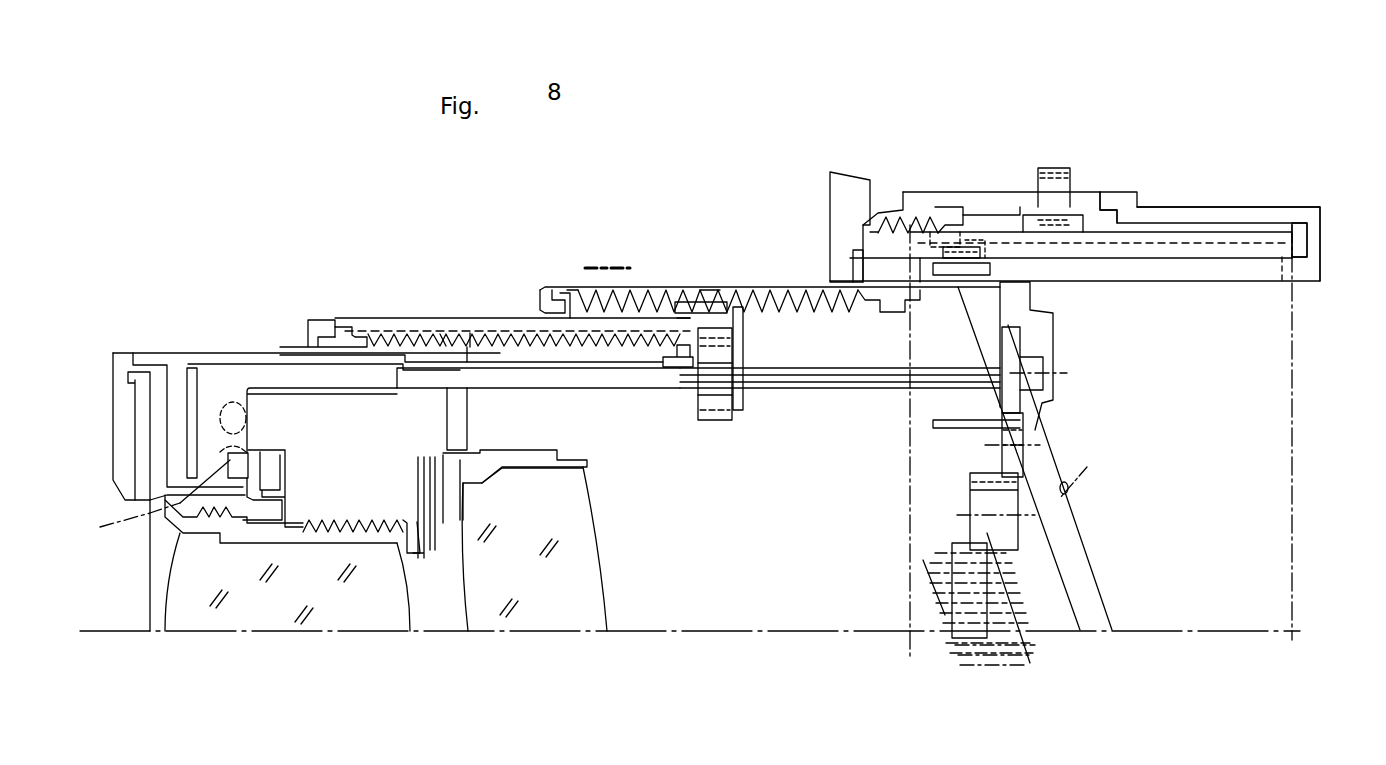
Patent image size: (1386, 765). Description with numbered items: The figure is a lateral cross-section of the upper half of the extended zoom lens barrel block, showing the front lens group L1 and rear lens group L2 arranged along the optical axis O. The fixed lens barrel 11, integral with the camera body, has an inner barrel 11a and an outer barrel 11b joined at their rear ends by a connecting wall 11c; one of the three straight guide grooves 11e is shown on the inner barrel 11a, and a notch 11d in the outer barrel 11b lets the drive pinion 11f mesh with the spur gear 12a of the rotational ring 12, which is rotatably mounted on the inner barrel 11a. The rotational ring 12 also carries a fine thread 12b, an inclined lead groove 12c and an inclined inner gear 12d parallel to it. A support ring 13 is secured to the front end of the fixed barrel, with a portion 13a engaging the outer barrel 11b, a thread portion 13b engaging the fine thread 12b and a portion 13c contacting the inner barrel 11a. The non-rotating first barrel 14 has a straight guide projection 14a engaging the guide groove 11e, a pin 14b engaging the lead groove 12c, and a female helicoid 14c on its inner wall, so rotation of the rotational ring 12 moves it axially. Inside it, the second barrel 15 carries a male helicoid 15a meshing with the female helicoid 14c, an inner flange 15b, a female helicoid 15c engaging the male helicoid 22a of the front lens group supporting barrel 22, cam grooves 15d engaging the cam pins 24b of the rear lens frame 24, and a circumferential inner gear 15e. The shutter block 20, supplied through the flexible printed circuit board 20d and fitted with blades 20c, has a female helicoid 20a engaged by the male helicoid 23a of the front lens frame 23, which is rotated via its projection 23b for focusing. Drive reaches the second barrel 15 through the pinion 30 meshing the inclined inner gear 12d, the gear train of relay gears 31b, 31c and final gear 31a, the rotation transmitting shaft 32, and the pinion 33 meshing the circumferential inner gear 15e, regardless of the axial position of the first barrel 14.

The fixed lens barrel 11 is at (1320, 192).
The inner barrel 11a is at (1145, 270).
The outer barrel 11b is at (1120, 200).
The connecting wall 11c is at (1318, 238).
The notch 11d is at (1087, 197).
The straight guide groove 11e is at (1258, 267).
The drive pinion 11f is at (1065, 180).
The rotational ring 12 is at (1207, 240).
The spur gear 12a is at (1027, 227).
The fine thread 12b is at (900, 283).
The lead groove 12c is at (1087, 467).
The inclined inner gear 12d is at (1013, 660).
The support ring 13 is at (892, 202).
The portion engaging the outer barrel 13a is at (973, 240).
The thread portion 13b is at (933, 222).
The portion contacting the inner barrel 13c is at (867, 270).
The first barrel 14 is at (723, 285).
The straight guide projection 14a is at (987, 268).
The pin 14b is at (973, 247).
The female helicoid 14c is at (787, 290).
The second barrel 15 is at (508, 328).
The male helicoid 15a is at (633, 315).
The inner flange 15b is at (690, 347).
The female helicoid 15c is at (443, 337).
The cam groove 15d is at (470, 333).
The circumferential inner gear 15e is at (710, 330).
The shutter block 20 is at (407, 573).
The female helicoid 20a is at (148, 502).
The blades 20c is at (428, 600).
The flexible printed circuit board 20d is at (257, 390).
The front lens group supporting barrel 22 is at (188, 357).
The male helicoid 22a is at (377, 337).
The front lens frame 23 is at (240, 545).
The male helicoid 23a is at (340, 547).
The projection 23b is at (267, 457).
The rear lens frame 24 is at (533, 463).
The cam pin 24b is at (513, 338).
The pinion 30 is at (963, 617).
The final gear 31a is at (1020, 363).
The relay gear 31b is at (1013, 430).
The relay gear 31c is at (997, 513).
The rotation transmitting shaft 32 is at (817, 392).
The pinion 33 is at (713, 388).
The front lens group L1 is at (273, 627).
The rear lens group L2 is at (570, 620).
The optical axis O is at (752, 638).